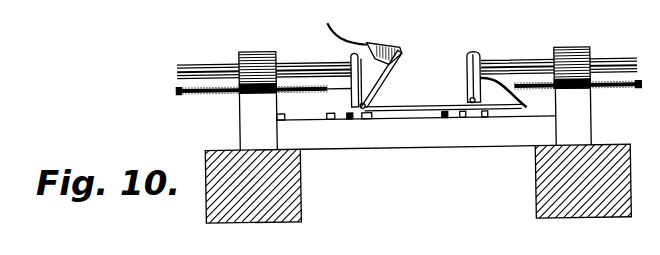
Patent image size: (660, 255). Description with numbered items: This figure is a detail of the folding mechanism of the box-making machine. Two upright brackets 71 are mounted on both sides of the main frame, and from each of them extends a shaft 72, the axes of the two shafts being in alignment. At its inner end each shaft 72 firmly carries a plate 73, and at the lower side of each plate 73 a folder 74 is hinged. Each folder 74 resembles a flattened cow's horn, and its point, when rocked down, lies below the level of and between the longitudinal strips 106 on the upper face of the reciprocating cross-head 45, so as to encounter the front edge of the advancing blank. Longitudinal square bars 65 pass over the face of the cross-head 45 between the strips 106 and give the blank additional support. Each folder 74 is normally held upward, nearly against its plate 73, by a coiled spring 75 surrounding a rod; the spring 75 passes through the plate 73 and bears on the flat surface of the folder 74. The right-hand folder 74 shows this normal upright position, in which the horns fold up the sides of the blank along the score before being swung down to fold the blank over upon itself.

The cross-head 45 is at (417, 127).
The longitudinal square bars 65 is at (352, 119).
The upright brackets 71 is at (415, 98).
The shafts 72 is at (407, 61).
The plates 73 is at (352, 96).
The folders 74 is at (344, 37).
The coiled spring 75 is at (203, 92).
The strips 106 is at (284, 119).